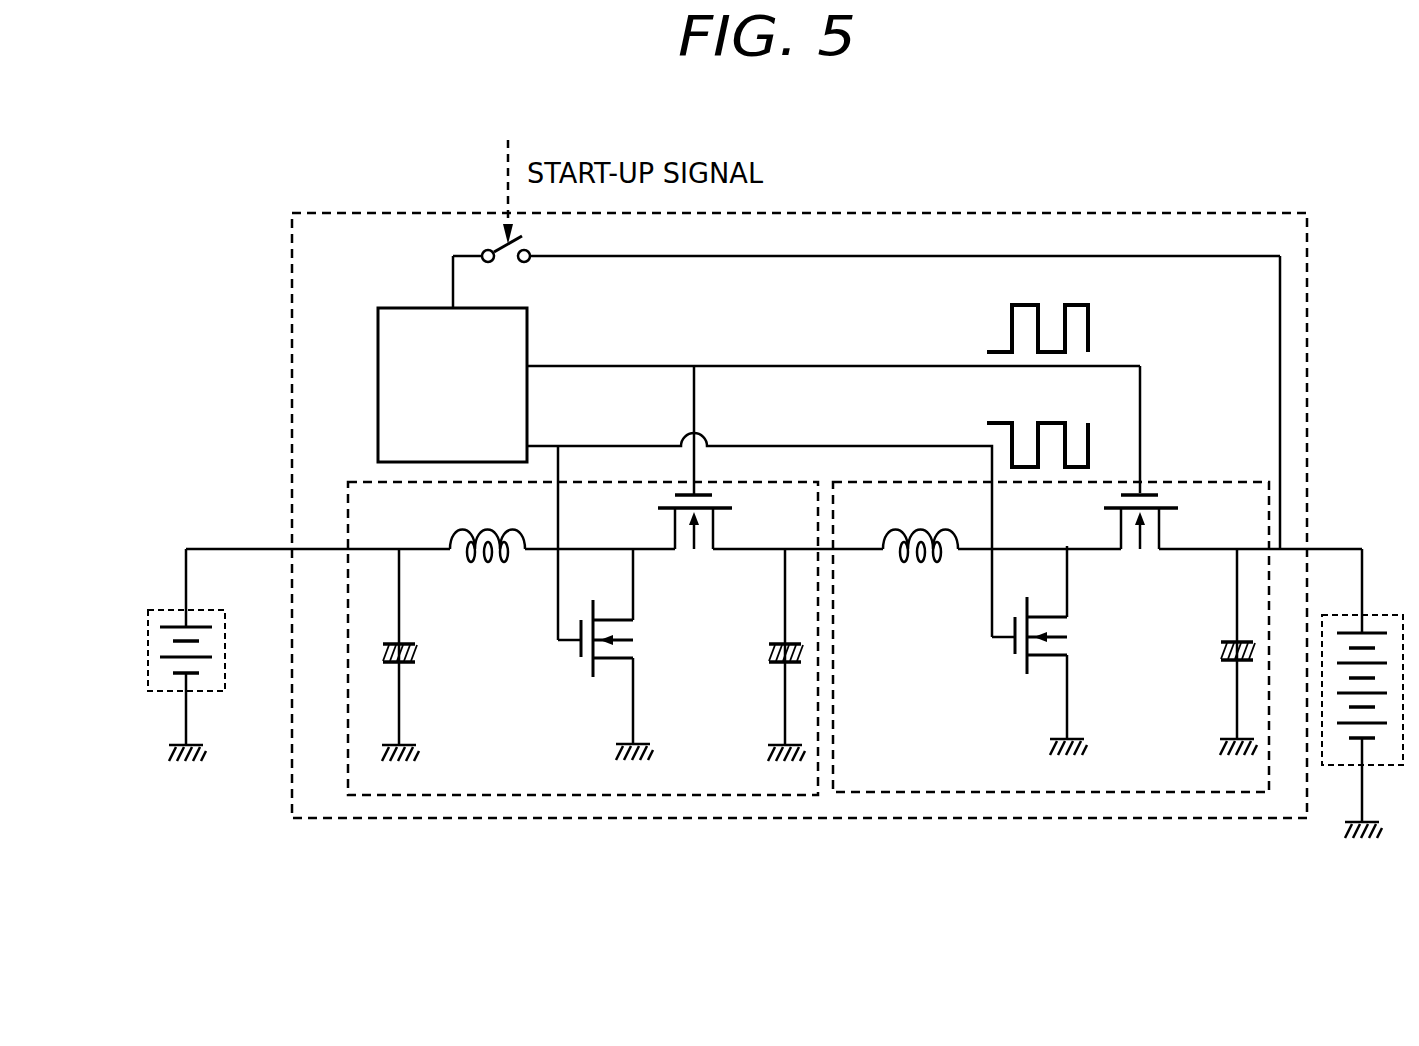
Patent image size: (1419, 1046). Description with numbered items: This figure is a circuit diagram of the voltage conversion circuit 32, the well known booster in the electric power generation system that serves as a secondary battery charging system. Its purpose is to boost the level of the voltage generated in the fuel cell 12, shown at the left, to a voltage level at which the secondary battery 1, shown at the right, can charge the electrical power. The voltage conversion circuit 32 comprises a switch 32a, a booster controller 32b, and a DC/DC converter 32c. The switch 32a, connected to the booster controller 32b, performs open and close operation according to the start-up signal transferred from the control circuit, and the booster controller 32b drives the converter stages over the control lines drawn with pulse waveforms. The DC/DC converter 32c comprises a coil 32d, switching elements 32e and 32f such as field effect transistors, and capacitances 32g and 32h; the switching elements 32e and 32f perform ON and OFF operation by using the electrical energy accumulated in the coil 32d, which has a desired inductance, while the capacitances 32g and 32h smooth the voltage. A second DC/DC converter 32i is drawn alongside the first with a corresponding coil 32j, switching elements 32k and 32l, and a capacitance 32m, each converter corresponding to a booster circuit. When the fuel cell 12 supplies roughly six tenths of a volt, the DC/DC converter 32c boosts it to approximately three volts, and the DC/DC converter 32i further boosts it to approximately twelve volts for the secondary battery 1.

The secondary battery 1 is at (1387, 615).
The fuel cell 12 is at (157, 610).
The voltage conversion circuit 32 is at (282, 280).
The switch 32a is at (503, 247).
The booster controller 32b is at (410, 306).
The DC/DC converter 32c is at (490, 795).
The coil 32d is at (492, 562).
The switching element 32e is at (578, 657).
The switching element 32f is at (672, 530).
The capacitance 32g is at (418, 650).
The capacitance 32h is at (768, 650).
The DC/DC converter 32i is at (982, 792).
The coil 32j is at (930, 562).
The switching transistor 32k is at (1011, 655).
The transistor 32l is at (1118, 530).
The capacitor 32m is at (1218, 648).